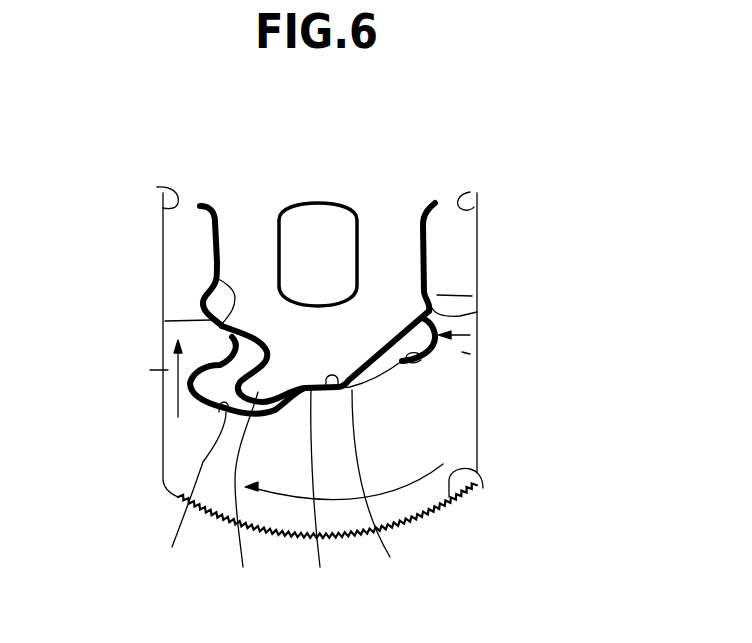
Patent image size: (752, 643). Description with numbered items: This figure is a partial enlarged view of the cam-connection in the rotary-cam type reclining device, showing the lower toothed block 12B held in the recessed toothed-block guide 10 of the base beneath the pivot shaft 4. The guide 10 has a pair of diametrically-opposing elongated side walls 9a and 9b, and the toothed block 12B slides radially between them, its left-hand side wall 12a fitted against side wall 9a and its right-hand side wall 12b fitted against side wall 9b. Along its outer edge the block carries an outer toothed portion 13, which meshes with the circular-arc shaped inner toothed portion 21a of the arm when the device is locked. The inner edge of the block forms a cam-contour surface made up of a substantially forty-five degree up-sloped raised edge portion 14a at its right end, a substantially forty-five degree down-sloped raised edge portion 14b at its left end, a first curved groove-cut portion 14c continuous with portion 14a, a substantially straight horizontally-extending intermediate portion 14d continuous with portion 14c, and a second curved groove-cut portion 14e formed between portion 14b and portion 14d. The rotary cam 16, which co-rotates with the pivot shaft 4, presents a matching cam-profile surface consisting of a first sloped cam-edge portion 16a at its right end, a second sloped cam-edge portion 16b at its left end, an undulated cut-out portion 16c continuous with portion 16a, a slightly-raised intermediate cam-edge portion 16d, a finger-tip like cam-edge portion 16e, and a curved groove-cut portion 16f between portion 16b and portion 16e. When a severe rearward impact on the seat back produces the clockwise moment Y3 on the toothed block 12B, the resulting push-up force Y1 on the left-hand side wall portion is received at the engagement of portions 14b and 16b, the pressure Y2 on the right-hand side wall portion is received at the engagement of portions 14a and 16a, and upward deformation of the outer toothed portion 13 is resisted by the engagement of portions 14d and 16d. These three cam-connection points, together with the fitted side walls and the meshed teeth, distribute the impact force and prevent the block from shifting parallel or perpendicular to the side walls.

The pivot shaft 4 is at (332, 217).
The elongated side wall 9a is at (157, 187).
The elongated side wall 9b is at (470, 192).
The recessed toothed-block guide 10 is at (168, 288).
The left-hand side wall of the toothed block 12a is at (150, 370).
The right-hand side wall of the toothed block 12b is at (463, 352).
The lower toothed block 12B is at (467, 440).
The outer toothed portion 13 is at (428, 514).
The up-sloped raised edge portion 14a is at (436, 294).
The down-sloped raised edge portion 14b is at (216, 278).
The first curved groove-cut portion 14c is at (353, 342).
The substantially straight intermediate portion 14d is at (386, 490).
The second curved groove-cut portion 14e is at (184, 490).
The rotary cam 16 is at (375, 380).
The first sloped cam-edge portion 16a is at (477, 312).
The second sloped cam-edge portion 16b is at (222, 326).
The undulated cut-out portion 16c is at (421, 357).
The slightly-raised intermediate cam-edge portion 16d is at (318, 485).
The finger-tip like cam-edge portion 16e is at (254, 497).
The curved groove-cut portion 16f is at (262, 350).
The inner toothed portion 21a is at (476, 474).
The push-up force Y1 is at (165, 401).
The pressure Y2 is at (467, 334).
The clockwise rotational force or moment Y3 is at (400, 500).